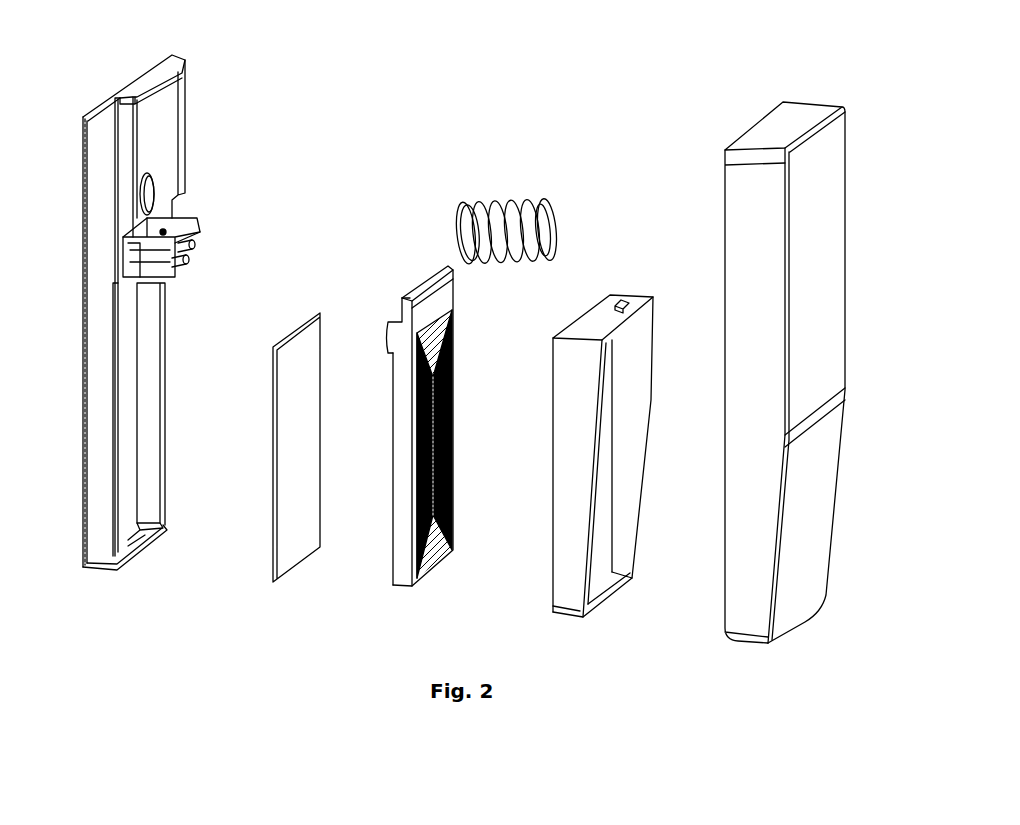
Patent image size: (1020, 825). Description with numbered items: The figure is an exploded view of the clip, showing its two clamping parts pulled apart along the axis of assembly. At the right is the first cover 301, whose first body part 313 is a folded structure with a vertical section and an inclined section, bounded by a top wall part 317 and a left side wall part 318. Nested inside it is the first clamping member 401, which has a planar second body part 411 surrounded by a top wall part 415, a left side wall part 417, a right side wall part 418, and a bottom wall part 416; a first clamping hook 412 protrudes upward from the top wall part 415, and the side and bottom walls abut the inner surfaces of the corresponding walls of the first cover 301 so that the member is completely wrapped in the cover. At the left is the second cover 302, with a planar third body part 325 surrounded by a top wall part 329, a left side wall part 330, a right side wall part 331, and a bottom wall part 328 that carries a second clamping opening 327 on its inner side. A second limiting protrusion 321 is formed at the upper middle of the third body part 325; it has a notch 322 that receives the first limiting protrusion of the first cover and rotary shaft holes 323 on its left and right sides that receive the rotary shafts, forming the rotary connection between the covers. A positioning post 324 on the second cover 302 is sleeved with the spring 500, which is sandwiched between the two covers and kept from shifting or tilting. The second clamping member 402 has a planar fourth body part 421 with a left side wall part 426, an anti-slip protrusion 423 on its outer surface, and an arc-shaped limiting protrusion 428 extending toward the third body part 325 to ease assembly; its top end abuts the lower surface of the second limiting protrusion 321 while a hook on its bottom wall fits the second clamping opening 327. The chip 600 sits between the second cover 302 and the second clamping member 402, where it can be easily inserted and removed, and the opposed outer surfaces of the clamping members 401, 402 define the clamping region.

The first cover 301 is at (818, 96).
The second cover 302 is at (193, 74).
The first body part 313 is at (835, 206).
The top wall part 317 is at (773, 128).
The left side wall part 318 is at (750, 248).
The second limiting protrusion 321 is at (190, 236).
The notch 322 is at (160, 231).
The rotary shaft holes 323 is at (180, 266).
The positioning post 324 is at (153, 180).
The third body part 325 is at (137, 378).
The second clamping opening 327 is at (148, 533).
The bottom wall part 328 is at (135, 548).
The top wall part 329 is at (135, 80).
The left side wall part 330 is at (88, 339).
The right side wall part 331 is at (152, 318).
The first clamping member 401 is at (648, 300).
The second clamping member 402 is at (418, 272).
The second body part 411 is at (600, 523).
The first clamping hook 412 is at (620, 306).
The top wall part 415 is at (580, 324).
The bottom wall part 416 is at (614, 588).
The left side wall part 417 is at (573, 458).
The right side wall part 418 is at (648, 390).
The fourth body part 421 is at (440, 316).
The anti-slip protrusion 423 is at (454, 416).
The left side wall part 426 is at (395, 392).
The arc-shaped limiting protrusion 428 is at (388, 340).
The spring 500 is at (558, 221).
The chip 600 is at (305, 447).